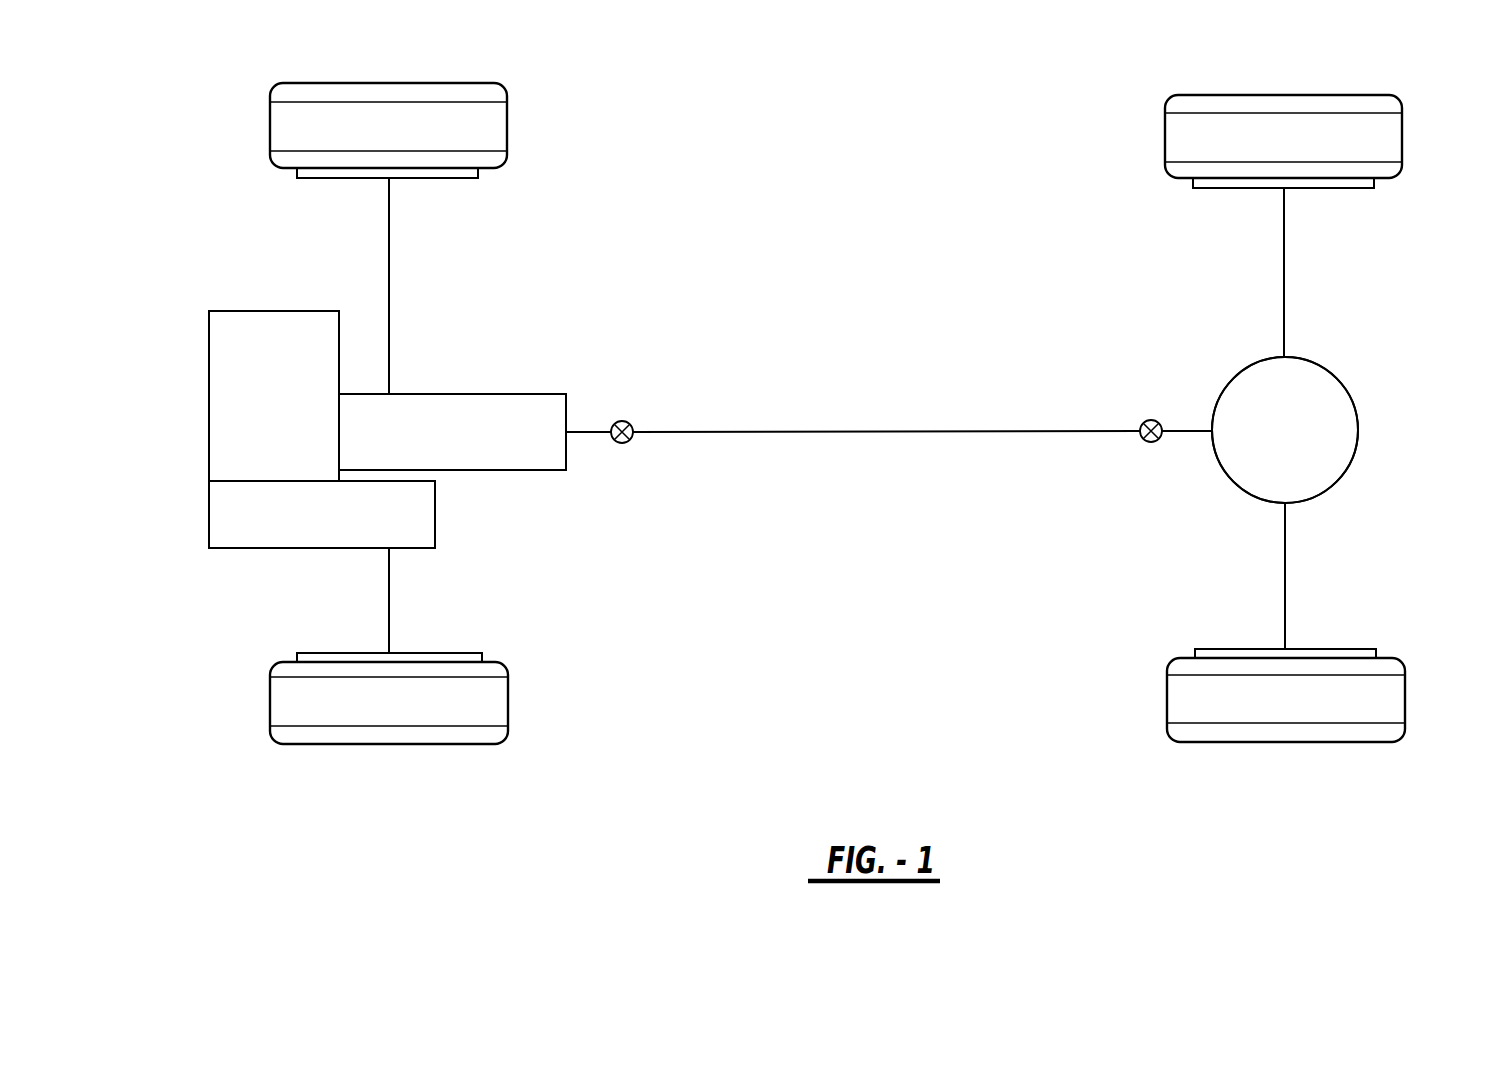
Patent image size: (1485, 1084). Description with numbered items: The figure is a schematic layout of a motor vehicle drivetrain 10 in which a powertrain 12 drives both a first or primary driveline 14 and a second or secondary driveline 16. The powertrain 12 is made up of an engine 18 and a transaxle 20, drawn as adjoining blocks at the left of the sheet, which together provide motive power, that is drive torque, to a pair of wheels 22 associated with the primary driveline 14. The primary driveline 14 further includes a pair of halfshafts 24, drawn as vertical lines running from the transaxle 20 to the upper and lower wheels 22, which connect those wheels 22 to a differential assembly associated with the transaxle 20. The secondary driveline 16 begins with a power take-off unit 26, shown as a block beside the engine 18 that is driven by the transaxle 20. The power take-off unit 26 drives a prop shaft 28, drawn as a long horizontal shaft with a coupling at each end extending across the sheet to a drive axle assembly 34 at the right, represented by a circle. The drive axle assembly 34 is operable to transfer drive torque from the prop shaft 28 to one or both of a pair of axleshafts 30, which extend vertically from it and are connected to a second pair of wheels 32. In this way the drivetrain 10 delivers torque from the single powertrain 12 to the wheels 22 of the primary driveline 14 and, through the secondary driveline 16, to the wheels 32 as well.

The vehicular drivetrain 10 is at (875, 168).
The powertrain 12 is at (248, 582).
The primary driveline 14 is at (463, 332).
The secondary driveline 16 is at (1070, 488).
The engine 18 is at (289, 401).
The transaxle 20 is at (330, 523).
The wheels 22 is at (497, 125).
The halfshafts 24 is at (389, 234).
The power take-off unit 26 is at (470, 393).
The prop shaft 28 is at (928, 430).
The axleshafts 30 is at (1284, 273).
The wheels 32 is at (1390, 138).
The drive axle assembly 34 is at (1328, 456).